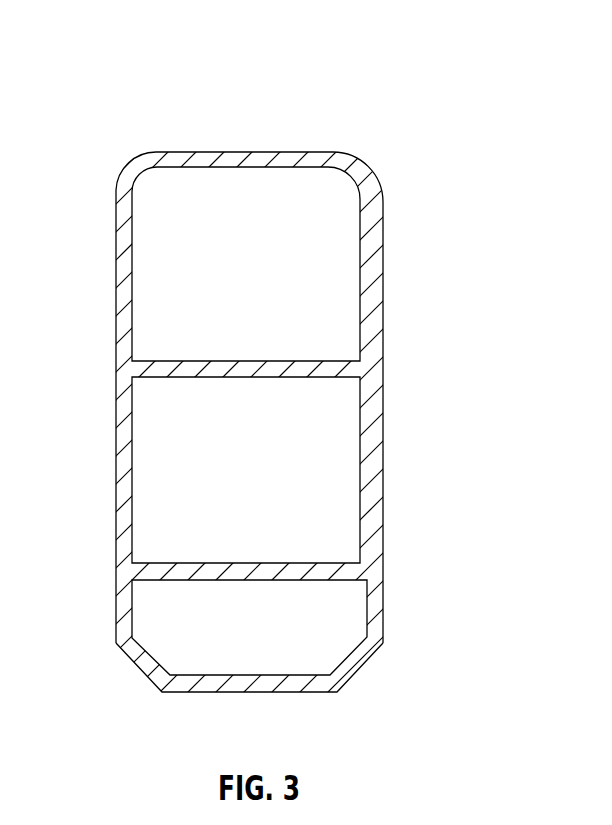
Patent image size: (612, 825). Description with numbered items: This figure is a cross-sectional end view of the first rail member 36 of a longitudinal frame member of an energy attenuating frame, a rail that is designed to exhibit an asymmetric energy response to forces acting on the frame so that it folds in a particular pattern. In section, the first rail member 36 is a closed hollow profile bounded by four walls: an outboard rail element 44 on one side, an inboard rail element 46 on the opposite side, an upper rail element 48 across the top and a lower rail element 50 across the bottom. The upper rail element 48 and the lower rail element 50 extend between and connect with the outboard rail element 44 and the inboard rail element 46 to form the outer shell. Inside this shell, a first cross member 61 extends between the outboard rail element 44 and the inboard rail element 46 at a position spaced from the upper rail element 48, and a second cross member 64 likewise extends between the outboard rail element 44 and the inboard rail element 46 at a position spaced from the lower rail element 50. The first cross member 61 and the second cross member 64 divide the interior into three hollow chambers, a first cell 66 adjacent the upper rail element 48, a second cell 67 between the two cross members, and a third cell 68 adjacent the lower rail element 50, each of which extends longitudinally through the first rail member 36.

The first rail member 36 is at (477, 378).
The outboard rail element 44 is at (105, 330).
The inboard rail element 46 is at (410, 343).
The upper rail element 48 is at (238, 142).
The lower rail element 50 is at (282, 705).
The first cross member 61 is at (282, 385).
The second cross member 64 is at (170, 590).
The first cell 66 is at (308, 211).
The second cell 67 is at (183, 492).
The third cell 68 is at (308, 645).